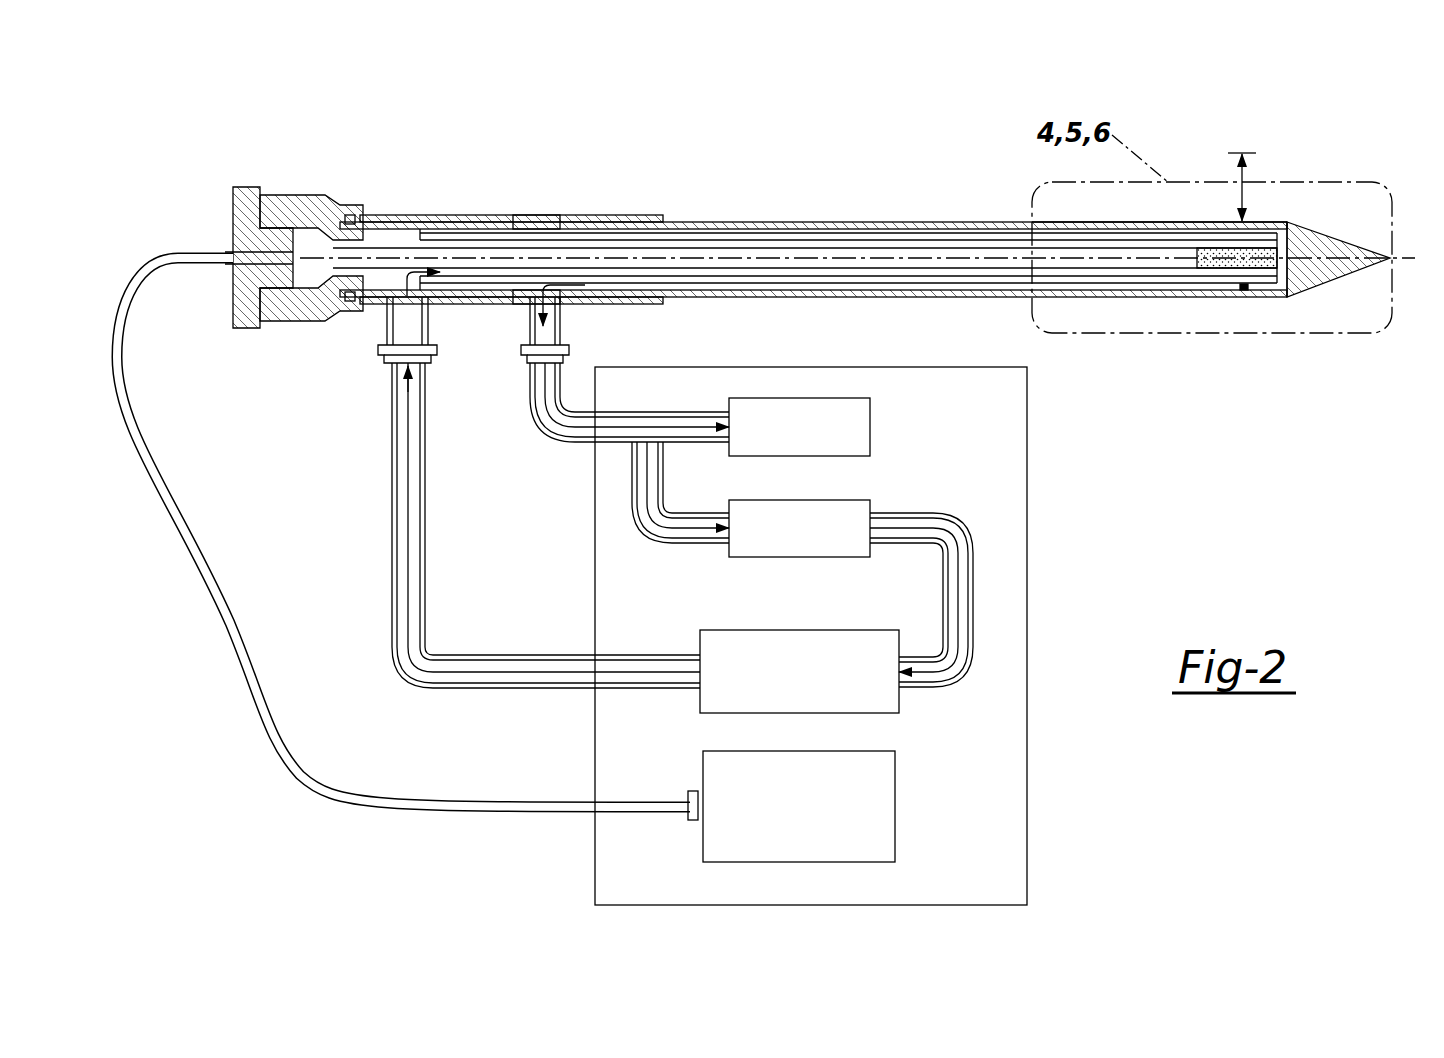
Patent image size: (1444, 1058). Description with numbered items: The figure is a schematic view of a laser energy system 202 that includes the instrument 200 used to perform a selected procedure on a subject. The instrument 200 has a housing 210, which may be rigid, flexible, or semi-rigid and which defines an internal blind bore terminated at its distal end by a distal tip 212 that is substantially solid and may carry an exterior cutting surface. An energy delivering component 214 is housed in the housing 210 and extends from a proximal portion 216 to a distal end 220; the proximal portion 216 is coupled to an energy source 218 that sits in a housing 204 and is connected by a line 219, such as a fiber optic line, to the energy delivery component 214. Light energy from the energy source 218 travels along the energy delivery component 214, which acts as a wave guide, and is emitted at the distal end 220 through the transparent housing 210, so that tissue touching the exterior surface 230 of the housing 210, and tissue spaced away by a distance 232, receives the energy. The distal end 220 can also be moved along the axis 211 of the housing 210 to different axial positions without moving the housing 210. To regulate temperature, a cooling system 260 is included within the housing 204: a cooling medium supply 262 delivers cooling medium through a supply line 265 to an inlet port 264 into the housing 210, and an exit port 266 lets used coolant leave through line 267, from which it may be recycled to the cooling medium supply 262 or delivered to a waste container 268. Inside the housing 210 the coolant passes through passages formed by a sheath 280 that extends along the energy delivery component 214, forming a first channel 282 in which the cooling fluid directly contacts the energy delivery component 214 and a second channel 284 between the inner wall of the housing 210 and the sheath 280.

The instrument 200 is at (910, 195).
The laser energy system 202 is at (668, 103).
The housing 204 is at (1027, 500).
The housing 210 is at (952, 222).
The axis 211 is at (862, 232).
The distal tip 212 is at (1340, 222).
The energy delivering component 214 is at (948, 262).
The proximal portion 216 is at (307, 243).
The energy source 218 is at (895, 838).
The line 219 is at (178, 500).
The distal end 220 is at (1215, 265).
The exterior surface 230 is at (1268, 222).
The distance 232 is at (1226, 152).
The cooling system 260 is at (920, 720).
The cooling medium supply 262 is at (700, 638).
The inlet port 264 is at (398, 342).
The supply line 265 is at (392, 482).
The exit port 266 is at (548, 338).
The line 267 is at (527, 380).
The waste container 268 is at (870, 415).
The sheath 280 is at (540, 230).
The first channel 282 is at (422, 245).
The second channel 284 is at (625, 228).